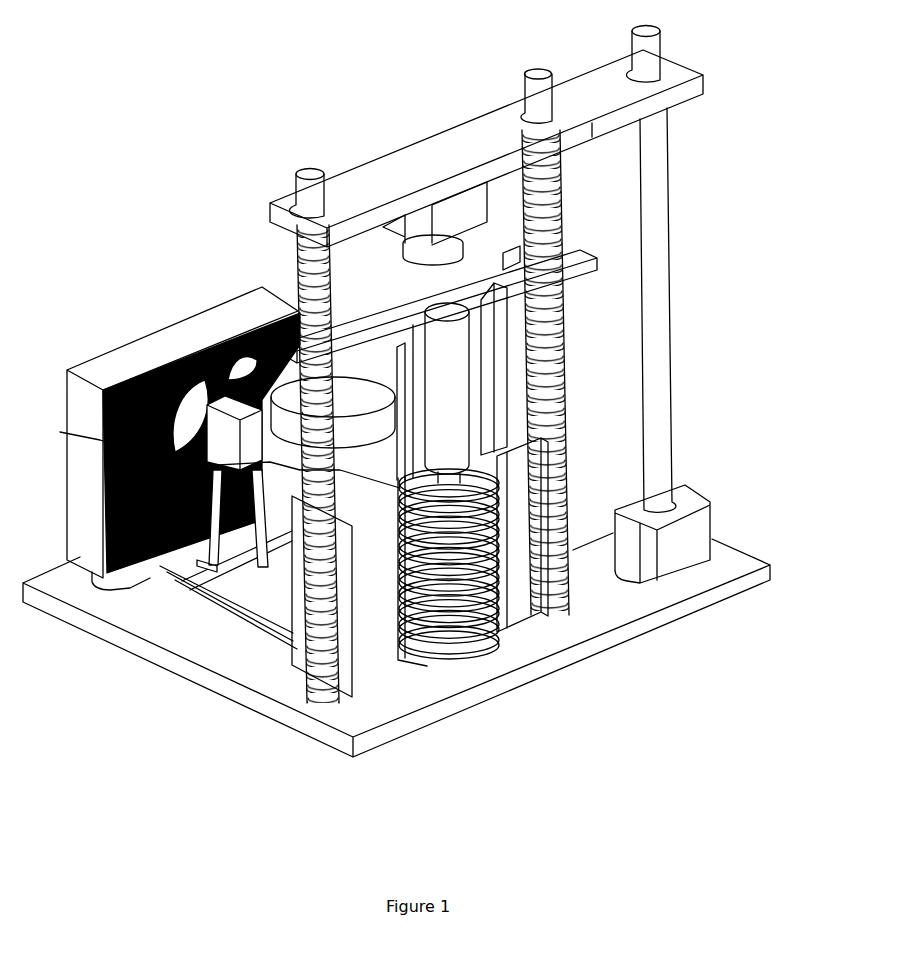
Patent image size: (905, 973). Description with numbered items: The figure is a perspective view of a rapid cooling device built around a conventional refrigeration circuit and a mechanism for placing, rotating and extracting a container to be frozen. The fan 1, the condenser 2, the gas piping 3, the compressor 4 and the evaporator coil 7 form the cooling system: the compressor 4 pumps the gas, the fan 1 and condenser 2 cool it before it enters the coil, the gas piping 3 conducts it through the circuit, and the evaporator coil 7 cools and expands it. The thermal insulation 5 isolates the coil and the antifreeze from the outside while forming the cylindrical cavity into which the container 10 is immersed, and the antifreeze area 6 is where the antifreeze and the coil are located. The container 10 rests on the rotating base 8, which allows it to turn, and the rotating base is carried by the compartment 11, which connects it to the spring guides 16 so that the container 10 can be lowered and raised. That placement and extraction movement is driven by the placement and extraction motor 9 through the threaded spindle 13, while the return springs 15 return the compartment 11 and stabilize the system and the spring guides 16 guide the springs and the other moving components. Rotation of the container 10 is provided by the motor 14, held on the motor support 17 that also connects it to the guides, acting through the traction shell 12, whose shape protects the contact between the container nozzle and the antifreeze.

The fan 1 is at (238, 300).
The condenser 2 is at (178, 340).
The gas piping 3 is at (193, 597).
The compressor 4 is at (260, 580).
The thermal insulation 5 is at (368, 630).
The antifreeze area 6 is at (405, 653).
The evaporator coil 7 is at (480, 653).
The rotating base 8 is at (513, 567).
The placement and extraction motor 9 is at (678, 542).
The container 10 is at (450, 397).
The compartment 11 is at (462, 272).
The traction shell 12 is at (493, 290).
The spindle 13 is at (655, 282).
The motor 14 is at (450, 221).
The return springs 15 is at (565, 192).
The spring guides 16 is at (527, 75).
The motor support 17 is at (287, 203).